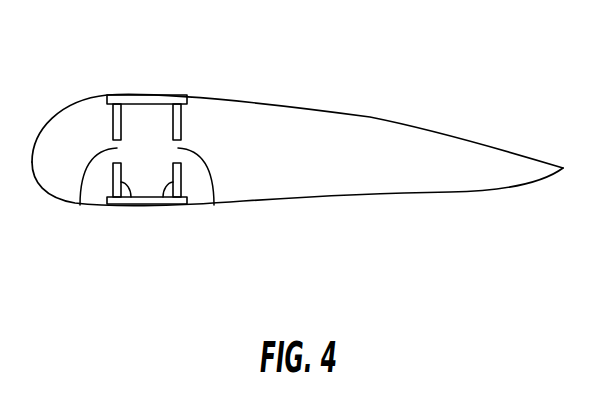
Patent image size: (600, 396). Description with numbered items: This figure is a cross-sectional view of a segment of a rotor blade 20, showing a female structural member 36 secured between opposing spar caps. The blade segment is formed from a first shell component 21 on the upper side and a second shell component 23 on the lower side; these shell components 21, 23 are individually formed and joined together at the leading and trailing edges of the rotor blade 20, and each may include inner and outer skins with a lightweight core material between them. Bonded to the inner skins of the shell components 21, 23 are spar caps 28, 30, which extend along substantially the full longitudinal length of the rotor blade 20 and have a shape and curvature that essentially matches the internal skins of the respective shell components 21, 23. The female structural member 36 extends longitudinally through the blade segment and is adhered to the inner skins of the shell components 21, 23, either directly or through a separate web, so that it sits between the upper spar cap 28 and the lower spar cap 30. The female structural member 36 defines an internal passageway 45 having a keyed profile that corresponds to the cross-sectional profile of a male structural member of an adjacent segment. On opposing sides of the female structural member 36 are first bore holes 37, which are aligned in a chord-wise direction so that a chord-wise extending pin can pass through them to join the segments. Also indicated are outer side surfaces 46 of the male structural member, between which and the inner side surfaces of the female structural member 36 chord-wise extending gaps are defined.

The rotor blade 20 is at (297, 129).
The first shell component 21 is at (448, 135).
The second shell component 23 is at (418, 193).
The spar cap 28 is at (132, 94).
The spar cap 30 is at (146, 205).
The female structural member 36 is at (183, 128).
The first bore holes 37 is at (80, 205).
The internal passageway 45 is at (152, 149).
The outer side surface 46 is at (128, 205).